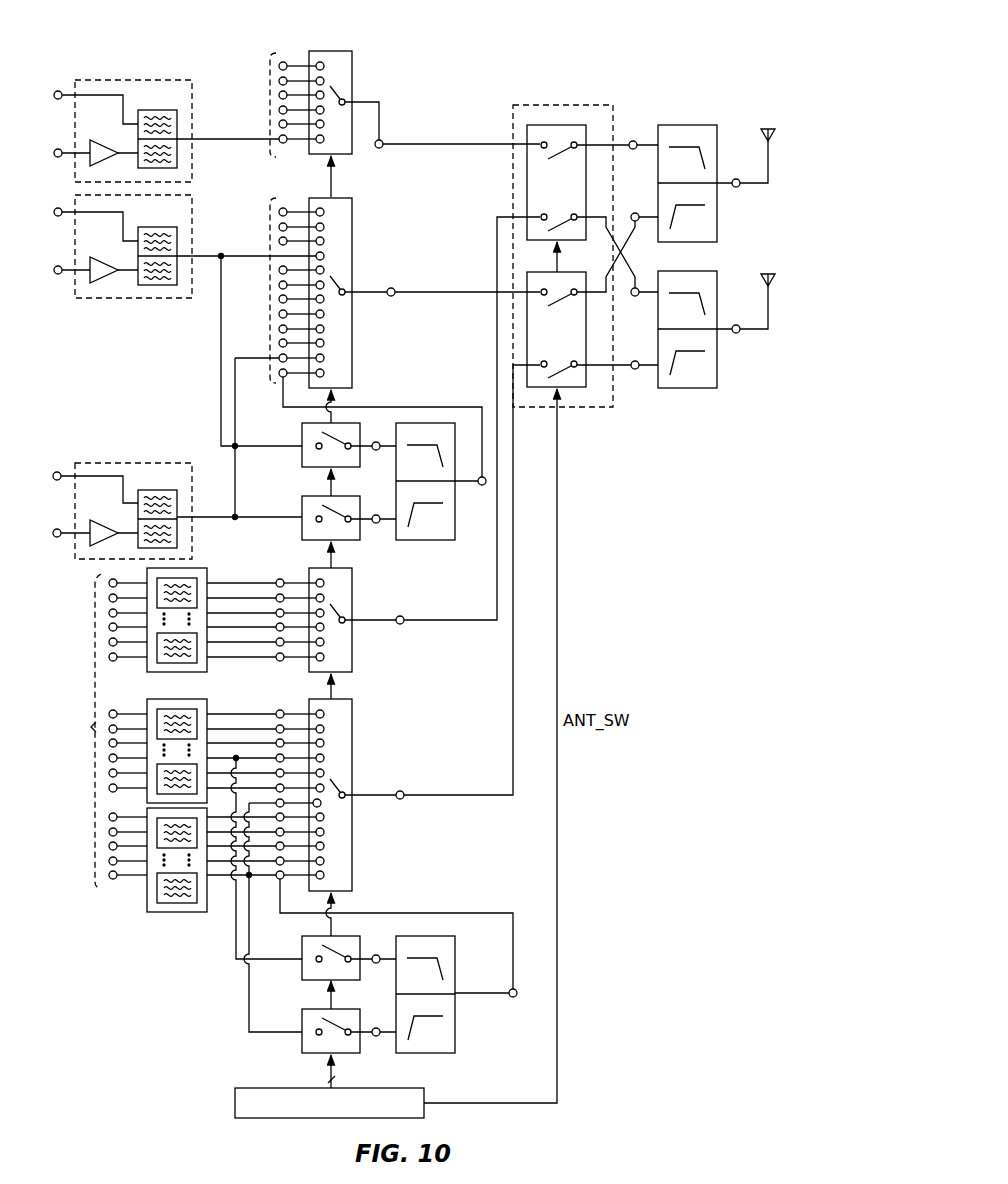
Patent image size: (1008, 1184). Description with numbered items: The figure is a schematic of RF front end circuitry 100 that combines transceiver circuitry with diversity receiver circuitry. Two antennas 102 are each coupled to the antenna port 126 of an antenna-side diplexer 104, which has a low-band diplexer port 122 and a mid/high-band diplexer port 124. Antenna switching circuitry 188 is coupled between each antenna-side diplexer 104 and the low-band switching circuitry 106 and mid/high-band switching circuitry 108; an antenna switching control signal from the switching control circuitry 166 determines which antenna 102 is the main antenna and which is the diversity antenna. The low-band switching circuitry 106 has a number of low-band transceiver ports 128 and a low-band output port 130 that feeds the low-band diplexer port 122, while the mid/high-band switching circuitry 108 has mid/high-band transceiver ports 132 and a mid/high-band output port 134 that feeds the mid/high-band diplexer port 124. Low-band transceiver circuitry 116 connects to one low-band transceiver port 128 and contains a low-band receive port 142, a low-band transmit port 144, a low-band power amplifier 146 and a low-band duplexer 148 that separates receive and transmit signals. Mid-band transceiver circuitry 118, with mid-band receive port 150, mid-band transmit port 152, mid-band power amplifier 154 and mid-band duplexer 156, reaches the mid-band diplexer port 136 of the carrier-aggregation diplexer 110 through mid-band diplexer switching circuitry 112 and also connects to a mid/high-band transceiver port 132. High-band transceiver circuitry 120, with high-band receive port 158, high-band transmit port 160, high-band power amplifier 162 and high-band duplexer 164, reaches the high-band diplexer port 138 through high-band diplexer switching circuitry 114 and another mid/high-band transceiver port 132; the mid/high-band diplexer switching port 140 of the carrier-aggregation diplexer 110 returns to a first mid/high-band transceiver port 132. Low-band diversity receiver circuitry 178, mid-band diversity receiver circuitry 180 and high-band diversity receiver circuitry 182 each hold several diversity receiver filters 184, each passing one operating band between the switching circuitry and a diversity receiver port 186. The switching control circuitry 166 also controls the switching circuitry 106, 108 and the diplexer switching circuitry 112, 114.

The RF front end circuitry 100 is at (575, 48).
The antenna 102 is at (768, 128).
The antenna-side diplexer 104 is at (672, 125).
The low-band switching circuitry 106 is at (315, 51).
The mid/high-band switching circuitry 108 is at (355, 228).
The carrier-aggregation diplexer 110 is at (430, 540).
The mid-band diplexer switching circuitry 112 is at (302, 440).
The high-band diplexer switching circuitry 114 is at (302, 510).
The low-band transceiver circuitry 116 is at (133, 117).
The mid-band transceiver circuitry 118 is at (156, 235).
The high-band transceiver circuitry 120 is at (139, 497).
The low-band diplexer port 122 is at (633, 141).
The mid/high-band diplexer port 124 is at (635, 213).
The antenna port 126 is at (736, 179).
The low-band transceiver ports 128 is at (263, 82).
The low-band output port 130 is at (379, 148).
The mid/high-band transceiver ports 132 is at (262, 231).
The mid/high-band output port 134 is at (391, 296).
The mid-band diplexer port 136 is at (376, 450).
The high-band diplexer port 138 is at (376, 523).
The mid/high-band diplexer switching port 140 is at (482, 485).
The low-band receive port 142 is at (57, 90).
The low-band transmit port 144 is at (57, 148).
The low-band power amplifier 146 is at (104, 146).
The low-band duplexer 148 is at (146, 110).
The mid-band receive port 150 is at (57, 207).
The mid-band transmit port 152 is at (57, 265).
The mid-band power amplifier 154 is at (104, 263).
The mid-band duplexer 156 is at (146, 227).
The high-band receive port 158 is at (56, 471).
The high-band transmit port 160 is at (56, 528).
The high-band power amplifier 162 is at (103, 533).
The high-band duplexer 164 is at (146, 490).
The switching control circuitry 166 is at (235, 1103).
The low-band diversity receiver circuitry 178 is at (197, 568).
The mid-band diversity receiver circuitry 180 is at (197, 699).
The high-band diversity receiver circuitry 182 is at (156, 873).
The diversity receiver filters 184 is at (150, 895).
The diversity receiver ports 186 is at (91, 727).
The antenna switching circuitry 188 is at (578, 105).